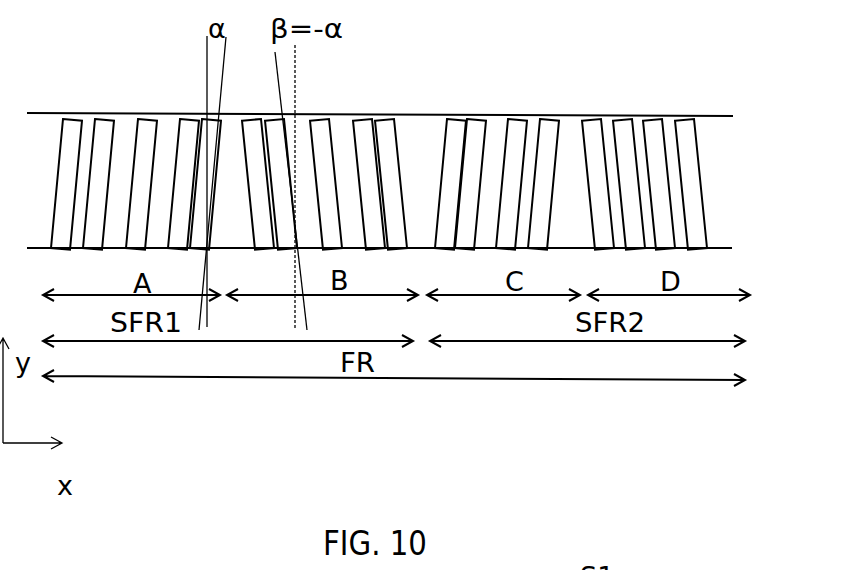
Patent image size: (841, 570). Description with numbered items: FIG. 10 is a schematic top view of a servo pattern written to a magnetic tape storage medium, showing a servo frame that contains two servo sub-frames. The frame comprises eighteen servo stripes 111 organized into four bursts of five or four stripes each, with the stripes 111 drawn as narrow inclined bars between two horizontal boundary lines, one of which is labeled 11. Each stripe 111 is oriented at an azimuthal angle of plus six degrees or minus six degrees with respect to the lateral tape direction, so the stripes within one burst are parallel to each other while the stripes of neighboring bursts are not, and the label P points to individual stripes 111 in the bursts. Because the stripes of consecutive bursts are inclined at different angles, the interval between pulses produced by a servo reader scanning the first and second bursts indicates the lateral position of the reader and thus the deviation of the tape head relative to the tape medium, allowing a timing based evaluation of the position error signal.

The base sheet 11 is at (413, 115).
The slat piece P is at (683, 120).
The servo stripe 111 is at (690, 157).